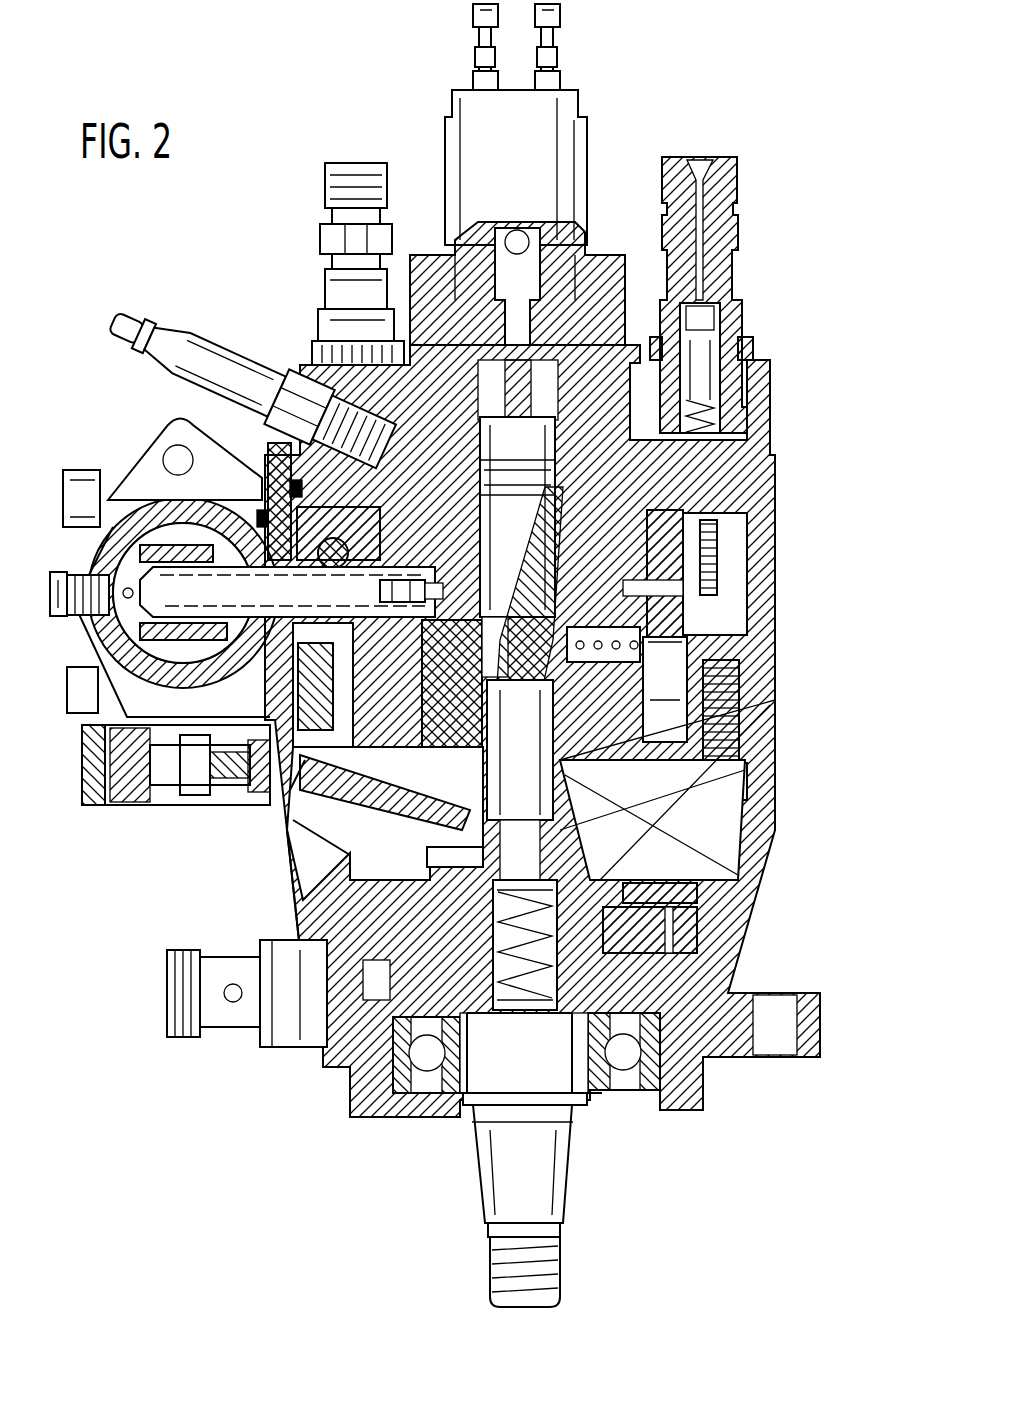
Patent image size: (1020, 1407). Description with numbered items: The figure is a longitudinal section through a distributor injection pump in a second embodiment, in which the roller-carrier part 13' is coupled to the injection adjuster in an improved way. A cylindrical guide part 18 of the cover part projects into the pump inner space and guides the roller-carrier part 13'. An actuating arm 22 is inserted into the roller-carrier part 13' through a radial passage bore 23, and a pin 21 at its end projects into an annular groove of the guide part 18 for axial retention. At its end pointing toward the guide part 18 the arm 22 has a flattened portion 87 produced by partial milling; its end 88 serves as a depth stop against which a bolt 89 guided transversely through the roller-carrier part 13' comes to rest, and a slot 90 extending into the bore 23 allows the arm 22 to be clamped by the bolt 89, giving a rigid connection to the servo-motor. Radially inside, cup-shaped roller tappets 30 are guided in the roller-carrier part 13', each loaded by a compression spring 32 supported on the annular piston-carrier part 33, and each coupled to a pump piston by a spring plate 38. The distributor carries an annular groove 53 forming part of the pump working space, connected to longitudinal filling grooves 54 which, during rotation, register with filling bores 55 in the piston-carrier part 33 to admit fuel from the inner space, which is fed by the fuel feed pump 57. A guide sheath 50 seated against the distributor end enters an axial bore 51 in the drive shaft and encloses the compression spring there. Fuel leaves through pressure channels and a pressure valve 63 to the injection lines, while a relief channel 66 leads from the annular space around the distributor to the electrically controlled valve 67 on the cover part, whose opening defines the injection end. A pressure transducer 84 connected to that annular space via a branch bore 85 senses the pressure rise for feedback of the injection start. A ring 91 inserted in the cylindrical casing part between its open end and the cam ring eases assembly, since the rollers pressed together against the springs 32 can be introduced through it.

The roller-carrier part 13' is at (182, 798).
The cylindrical guide part 18 is at (735, 540).
The pin 21 is at (380, 594).
The actuating arm 22 is at (279, 592).
The radial passage bore 23 is at (150, 632).
The roller tappet 30 is at (660, 678).
The compression spring 32 is at (712, 700).
The piston-carrier part 33 is at (570, 800).
The spring plate 38 is at (690, 650).
The guide sheath 50 is at (630, 920).
The axial bore 51 is at (620, 985).
The annular groove 53 is at (300, 855).
The longitudinal grooves 54 is at (522, 845).
The filling bores 55 is at (600, 790).
The fuel feed pump 57 is at (722, 943).
The pressure valve 63 is at (754, 317).
The relief channel 66 is at (480, 255).
The electrically controlled valve 67 is at (568, 128).
The pressure transducer 84 is at (335, 345).
The branch bore 85 is at (462, 486).
The flattened portion 87 is at (395, 565).
The end of the flattened portion 88 is at (325, 565).
The bolt 89 is at (182, 455).
The slot 90 is at (268, 452).
The ring 91 is at (718, 556).